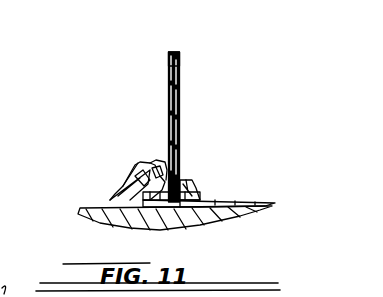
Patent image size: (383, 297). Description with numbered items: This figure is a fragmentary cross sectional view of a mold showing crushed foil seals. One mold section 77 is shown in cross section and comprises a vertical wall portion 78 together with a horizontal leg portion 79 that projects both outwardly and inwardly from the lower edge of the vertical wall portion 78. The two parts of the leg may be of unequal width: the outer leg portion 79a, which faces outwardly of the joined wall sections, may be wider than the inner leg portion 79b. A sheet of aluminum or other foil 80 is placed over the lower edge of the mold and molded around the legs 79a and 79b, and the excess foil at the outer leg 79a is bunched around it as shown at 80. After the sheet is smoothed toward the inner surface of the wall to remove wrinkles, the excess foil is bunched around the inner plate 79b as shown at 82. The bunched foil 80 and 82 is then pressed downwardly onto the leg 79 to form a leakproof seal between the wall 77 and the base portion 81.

The mold section 77 is at (180, 60).
The vertical wall portion 78 is at (180, 100).
The horizontal leg portion 79 is at (150, 160).
The outer leg portion 79a is at (130, 206).
The inner leg portion 79b is at (190, 205).
The foil sheet 80 is at (122, 184).
The base portion 81 is at (266, 207).
The bunched foil 82 is at (196, 201).